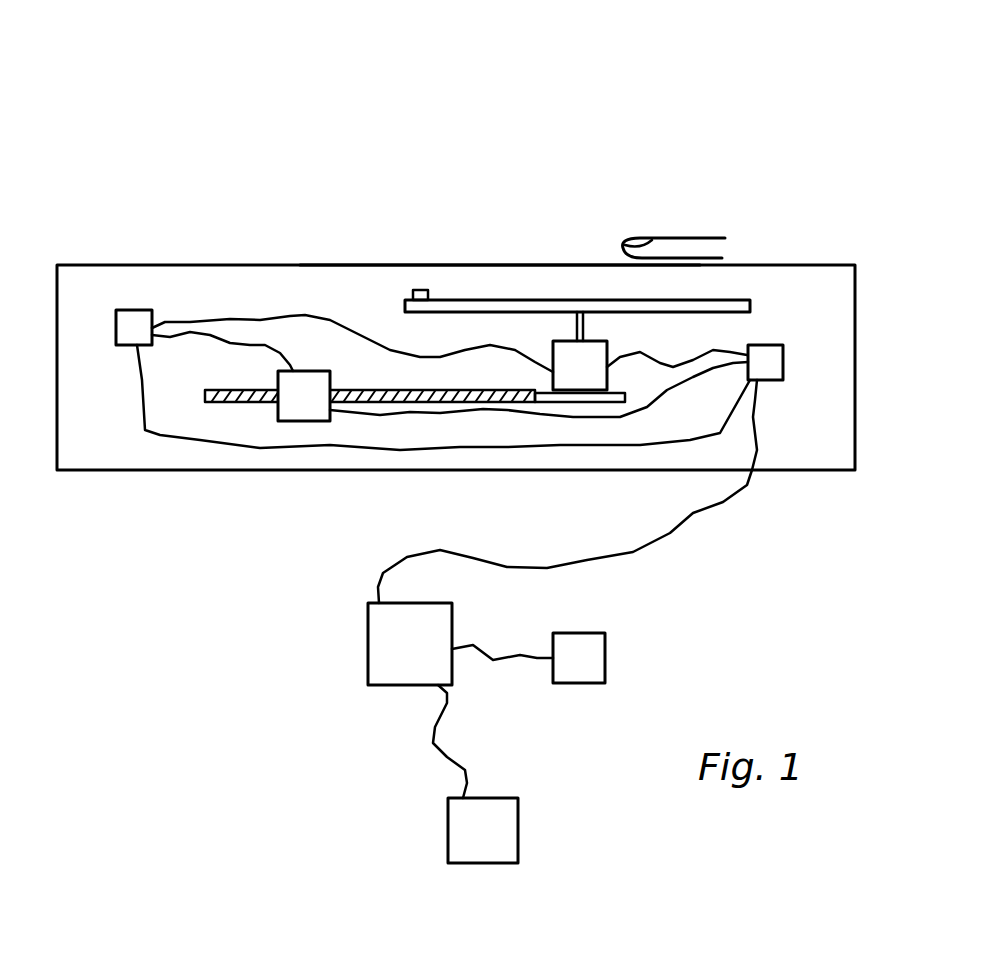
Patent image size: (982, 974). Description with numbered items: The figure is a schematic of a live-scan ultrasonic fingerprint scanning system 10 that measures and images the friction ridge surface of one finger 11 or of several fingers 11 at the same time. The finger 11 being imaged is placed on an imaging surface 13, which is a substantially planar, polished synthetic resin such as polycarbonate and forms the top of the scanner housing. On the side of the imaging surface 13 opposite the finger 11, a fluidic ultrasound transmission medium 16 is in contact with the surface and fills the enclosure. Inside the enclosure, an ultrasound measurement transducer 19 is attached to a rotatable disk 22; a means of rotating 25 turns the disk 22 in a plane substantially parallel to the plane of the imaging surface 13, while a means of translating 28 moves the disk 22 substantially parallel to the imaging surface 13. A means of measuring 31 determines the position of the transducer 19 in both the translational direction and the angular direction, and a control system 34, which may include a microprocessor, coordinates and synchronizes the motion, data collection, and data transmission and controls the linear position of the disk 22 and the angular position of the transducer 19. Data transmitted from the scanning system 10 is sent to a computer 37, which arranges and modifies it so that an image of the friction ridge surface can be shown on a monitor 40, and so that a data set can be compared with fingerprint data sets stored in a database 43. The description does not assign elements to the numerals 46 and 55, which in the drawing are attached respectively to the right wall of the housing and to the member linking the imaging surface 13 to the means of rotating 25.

The live-scan ultrasonic fingerprint scanning system 10 is at (299, 160).
The finger 11 is at (658, 237).
The imaging surface 13 is at (517, 264).
The fluidic ultrasound transmission medium 16 is at (826, 309).
The ultrasound measurement transducer 19 is at (430, 292).
The rotatable disk 22 is at (405, 302).
The means of rotating 25 is at (595, 378).
The means of translating 28 is at (320, 408).
The means of measuring 31 is at (147, 341).
The control system 34 is at (778, 376).
The computer 37 is at (416, 646).
The monitor 40 is at (595, 667).
The database 43 is at (483, 830).
The housing 46 is at (857, 362).
The lever 55 is at (581, 299).